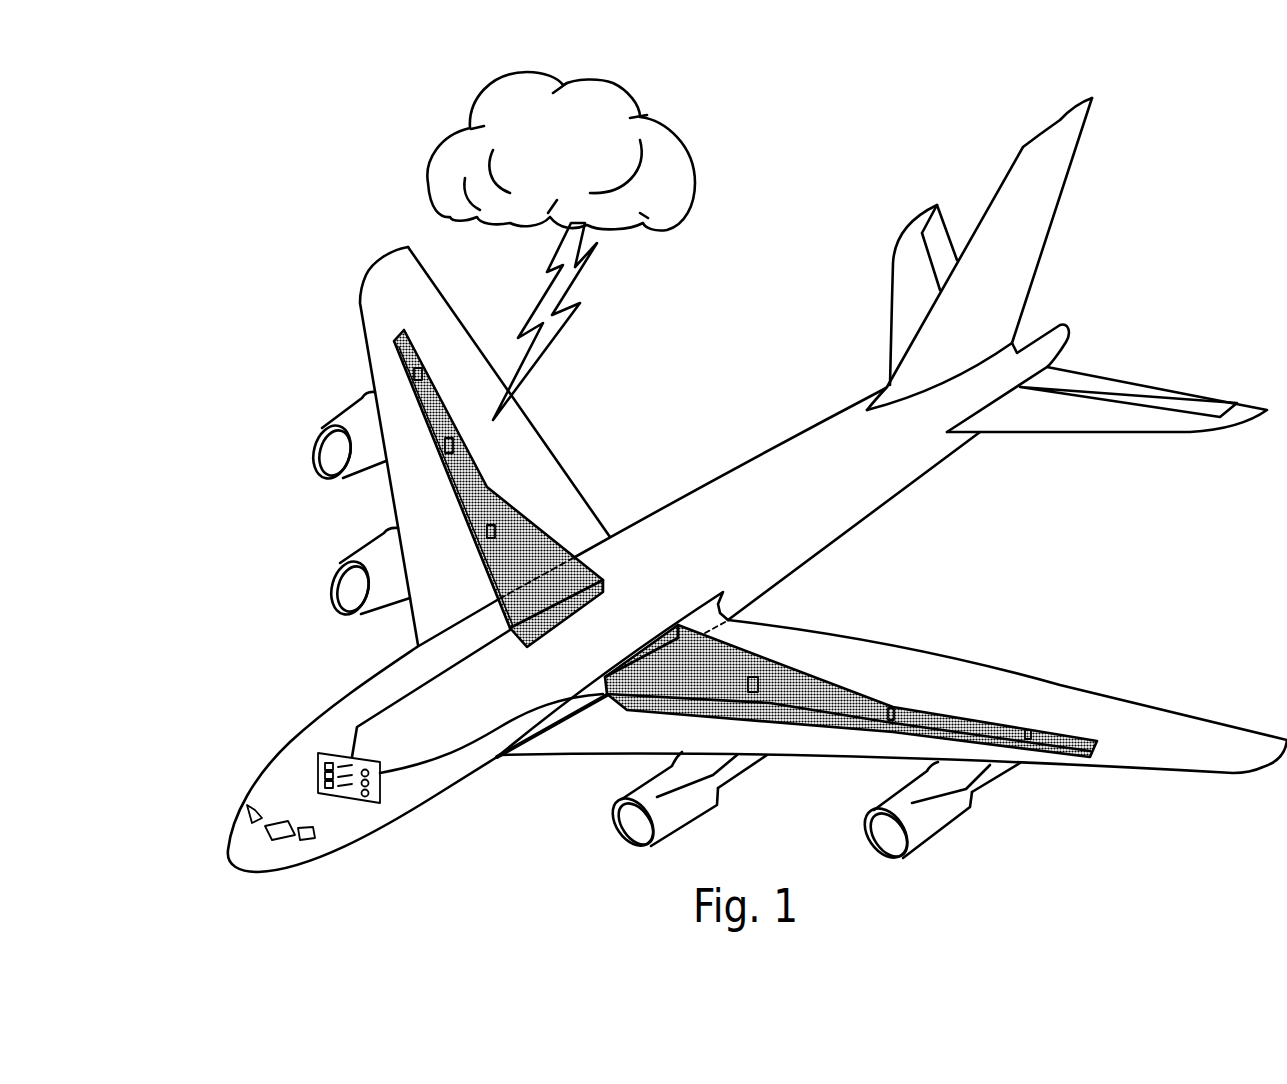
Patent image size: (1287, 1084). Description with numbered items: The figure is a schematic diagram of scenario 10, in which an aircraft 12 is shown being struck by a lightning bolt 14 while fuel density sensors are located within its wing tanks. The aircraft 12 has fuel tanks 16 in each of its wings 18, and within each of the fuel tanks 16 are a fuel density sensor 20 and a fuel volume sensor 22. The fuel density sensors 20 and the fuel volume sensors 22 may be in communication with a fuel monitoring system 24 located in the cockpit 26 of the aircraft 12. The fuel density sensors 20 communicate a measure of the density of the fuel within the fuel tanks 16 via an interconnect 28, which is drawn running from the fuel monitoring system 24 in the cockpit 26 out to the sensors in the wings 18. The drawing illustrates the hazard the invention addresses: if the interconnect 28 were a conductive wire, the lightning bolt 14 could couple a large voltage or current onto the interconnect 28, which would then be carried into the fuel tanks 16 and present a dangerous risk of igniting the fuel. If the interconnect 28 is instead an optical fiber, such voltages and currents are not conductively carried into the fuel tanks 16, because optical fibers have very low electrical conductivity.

The scenario 10 is at (1140, 183).
The aircraft 12 is at (808, 403).
The lightning bolt 14 is at (547, 288).
The fuel tank 16 is at (725, 559).
The wing 18 is at (387, 307).
The fuel density sensor 20 is at (520, 602).
The fuel volume sensor 22 is at (415, 374).
The fuel monitoring system 24 is at (328, 752).
The cockpit 26 is at (268, 748).
The interconnect 28 is at (460, 678).